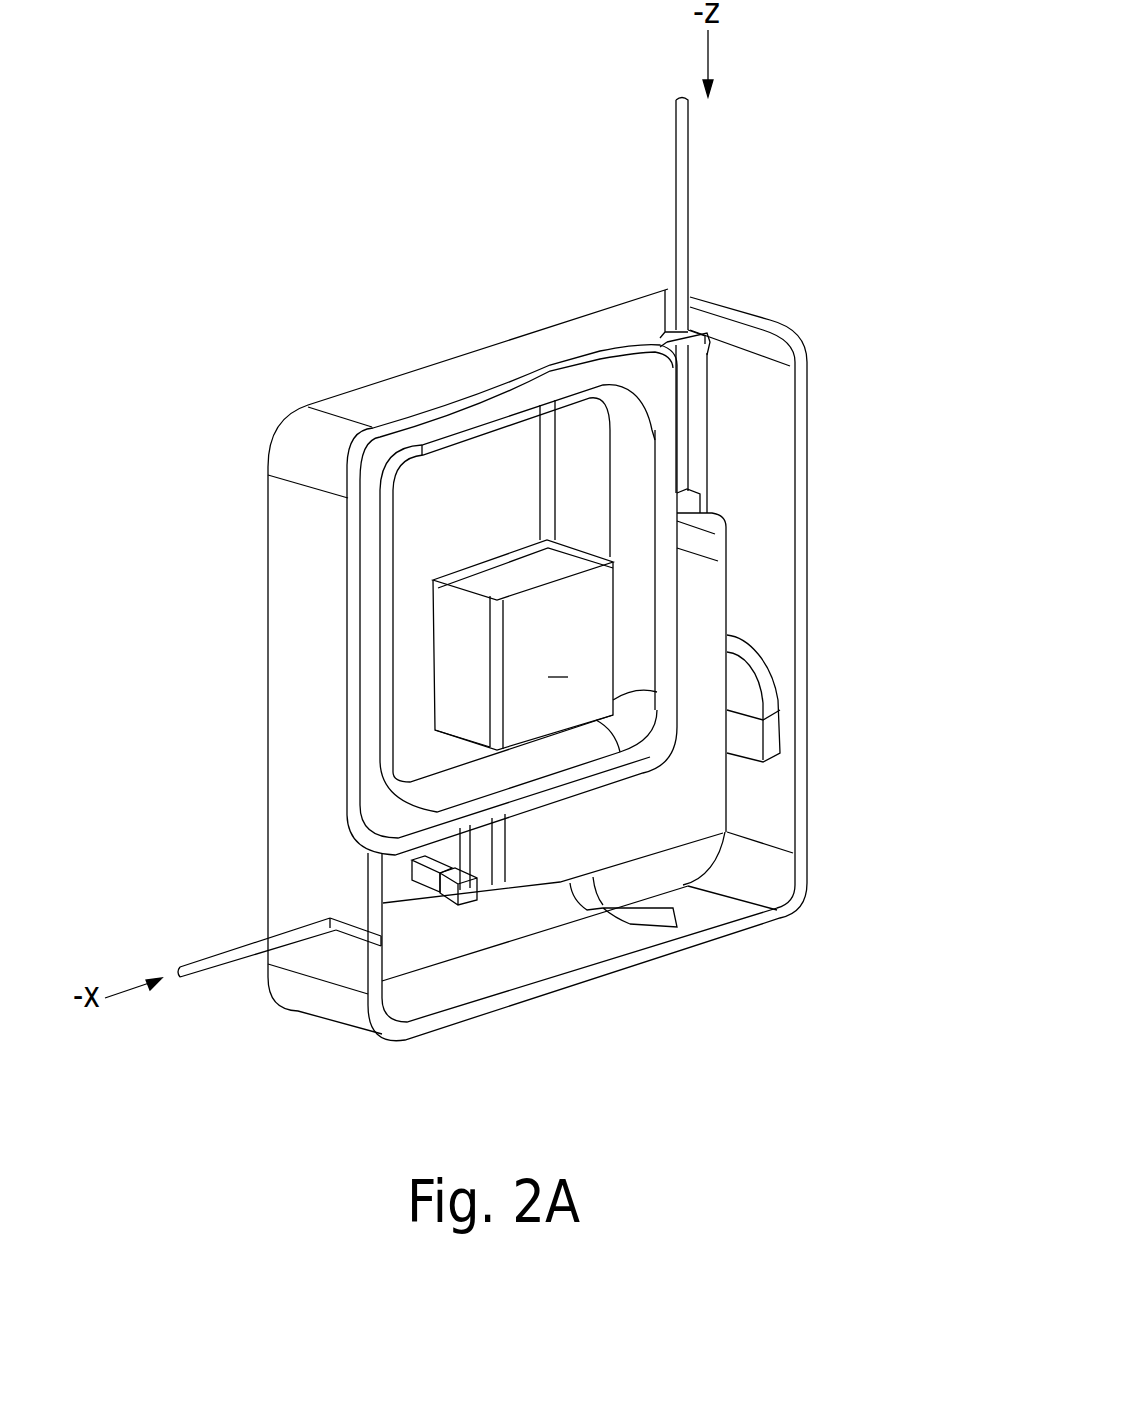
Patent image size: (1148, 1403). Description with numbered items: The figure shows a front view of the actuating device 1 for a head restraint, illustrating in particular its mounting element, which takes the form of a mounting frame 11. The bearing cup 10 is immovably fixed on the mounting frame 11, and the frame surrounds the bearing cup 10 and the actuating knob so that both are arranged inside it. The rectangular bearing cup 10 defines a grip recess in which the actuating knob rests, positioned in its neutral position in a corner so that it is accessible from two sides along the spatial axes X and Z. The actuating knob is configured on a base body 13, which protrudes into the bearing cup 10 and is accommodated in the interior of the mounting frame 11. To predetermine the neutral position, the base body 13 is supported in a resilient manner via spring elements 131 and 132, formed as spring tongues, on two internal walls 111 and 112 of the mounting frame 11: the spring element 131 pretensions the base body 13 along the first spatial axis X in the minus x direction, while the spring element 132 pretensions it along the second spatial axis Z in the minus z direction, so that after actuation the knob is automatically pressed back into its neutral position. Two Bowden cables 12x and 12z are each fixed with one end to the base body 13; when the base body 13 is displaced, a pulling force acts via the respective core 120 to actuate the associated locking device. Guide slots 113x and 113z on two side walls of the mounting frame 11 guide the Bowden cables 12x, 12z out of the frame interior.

The actuating device 1 is at (772, 312).
The bearing cup 10 is at (371, 427).
The mounting frame 11 is at (768, 537).
The Bowden cable 12x is at (204, 948).
The Bowden cable 12z is at (674, 176).
The base body 13 is at (735, 575).
The internal wall 111 is at (750, 480).
The internal wall 112 is at (507, 962).
The guide slot 113x is at (338, 940).
The guide slot 113z is at (705, 322).
The core 120 is at (693, 390).
The spring element 131 is at (765, 703).
The spring element 132 is at (622, 920).